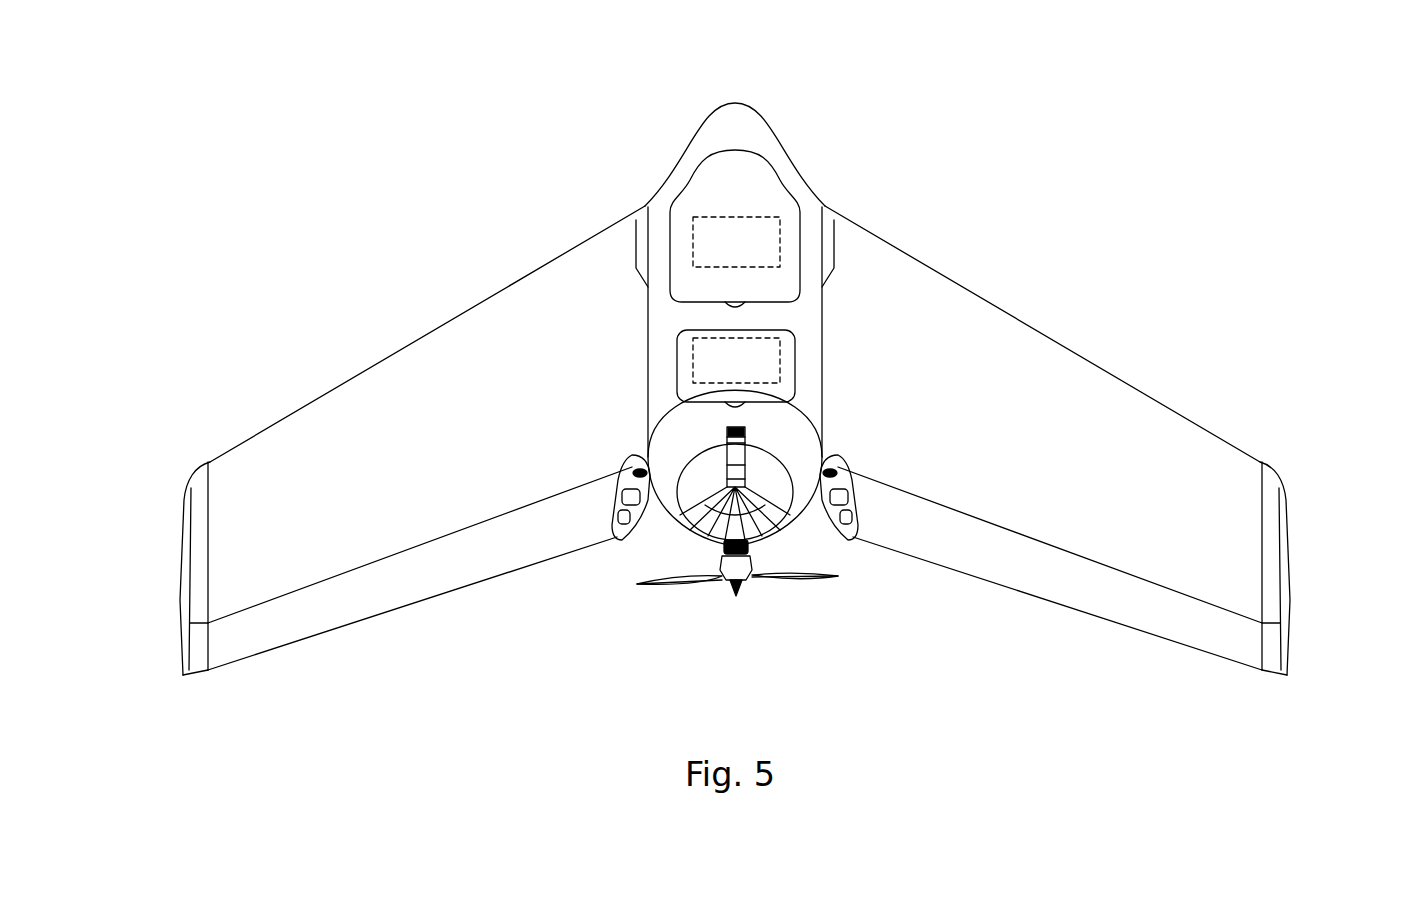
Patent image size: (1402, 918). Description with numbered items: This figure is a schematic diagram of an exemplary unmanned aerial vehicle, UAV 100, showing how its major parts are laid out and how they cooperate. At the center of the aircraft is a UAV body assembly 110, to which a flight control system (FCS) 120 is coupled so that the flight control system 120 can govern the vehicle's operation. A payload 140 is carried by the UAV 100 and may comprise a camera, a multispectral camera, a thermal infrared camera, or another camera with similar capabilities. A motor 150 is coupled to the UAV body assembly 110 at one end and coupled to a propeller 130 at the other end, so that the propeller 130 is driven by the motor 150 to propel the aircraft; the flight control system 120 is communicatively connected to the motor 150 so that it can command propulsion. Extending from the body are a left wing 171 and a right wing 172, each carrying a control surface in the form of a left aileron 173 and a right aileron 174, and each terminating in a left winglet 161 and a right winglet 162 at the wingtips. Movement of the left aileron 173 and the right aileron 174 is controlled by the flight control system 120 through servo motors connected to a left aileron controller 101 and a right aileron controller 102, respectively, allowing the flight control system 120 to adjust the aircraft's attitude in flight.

The UAV 100 is at (716, 54).
The UAV body assembly 110 is at (801, 171).
The flight control system 120 is at (735, 228).
The payload 140 is at (736, 368).
The motor 150 is at (735, 594).
The propeller 130 is at (797, 582).
The left aileron controller 101 is at (617, 537).
The right aileron controller 102 is at (853, 537).
The left wing 171 is at (427, 335).
The right wing 172 is at (1042, 337).
The left aileron 173 is at (450, 593).
The right aileron 174 is at (1058, 603).
The left winglet 161 is at (185, 582).
The right winglet 162 is at (1288, 585).